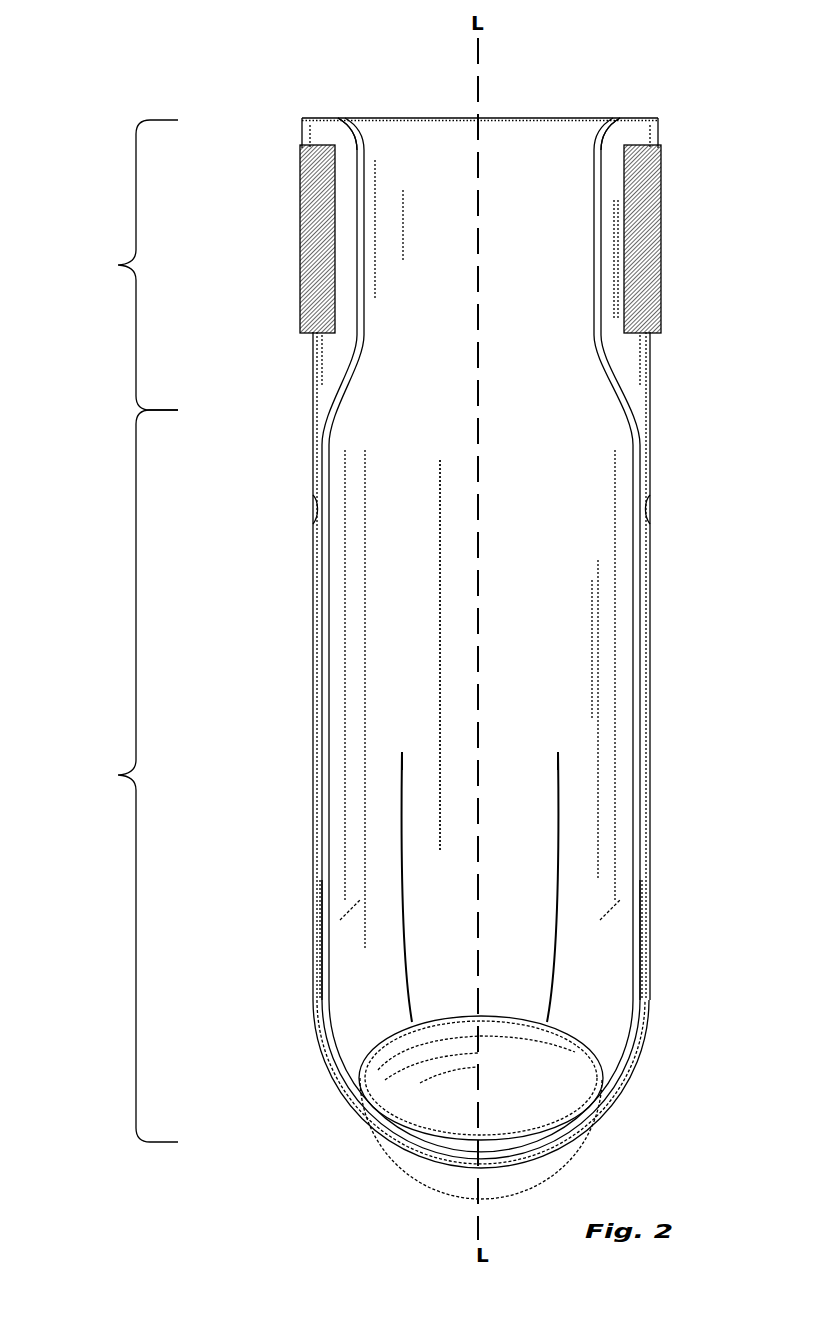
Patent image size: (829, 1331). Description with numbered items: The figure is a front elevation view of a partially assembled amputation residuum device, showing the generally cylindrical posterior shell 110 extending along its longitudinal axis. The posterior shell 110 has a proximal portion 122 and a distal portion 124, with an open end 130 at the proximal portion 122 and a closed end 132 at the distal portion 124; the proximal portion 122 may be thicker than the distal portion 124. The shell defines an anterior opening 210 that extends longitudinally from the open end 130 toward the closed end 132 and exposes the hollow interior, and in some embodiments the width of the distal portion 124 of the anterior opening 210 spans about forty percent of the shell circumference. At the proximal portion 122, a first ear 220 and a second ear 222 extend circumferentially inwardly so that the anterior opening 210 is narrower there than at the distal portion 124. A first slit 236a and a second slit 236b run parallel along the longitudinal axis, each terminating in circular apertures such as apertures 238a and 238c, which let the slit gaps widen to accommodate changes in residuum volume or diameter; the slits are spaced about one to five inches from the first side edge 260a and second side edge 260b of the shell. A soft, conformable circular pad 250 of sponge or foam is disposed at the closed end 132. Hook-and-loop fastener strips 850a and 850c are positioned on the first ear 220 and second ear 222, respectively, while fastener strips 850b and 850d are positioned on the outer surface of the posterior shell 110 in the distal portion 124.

The posterior shell 110 is at (640, 398).
The proximal portion 122 is at (107, 265).
The distal portion 124 is at (107, 776).
The open end 130 is at (421, 114).
The closed end 132 is at (407, 1147).
The anterior opening 210 is at (405, 610).
The first ear 220 is at (352, 148).
The second ear 222 is at (606, 148).
The first slit 236a is at (402, 776).
The second slit 236b is at (558, 777).
The circular aperture 238a is at (401, 748).
The circular aperture 238c is at (557, 748).
The circular pad 250 is at (416, 1048).
The first side edge 260a is at (318, 920).
The second side edge 260b is at (646, 957).
The fastener strip 850a is at (312, 200).
The fastener strip 850b is at (313, 522).
The fastener strip 850c is at (650, 242).
The fastener strip 850d is at (650, 524).